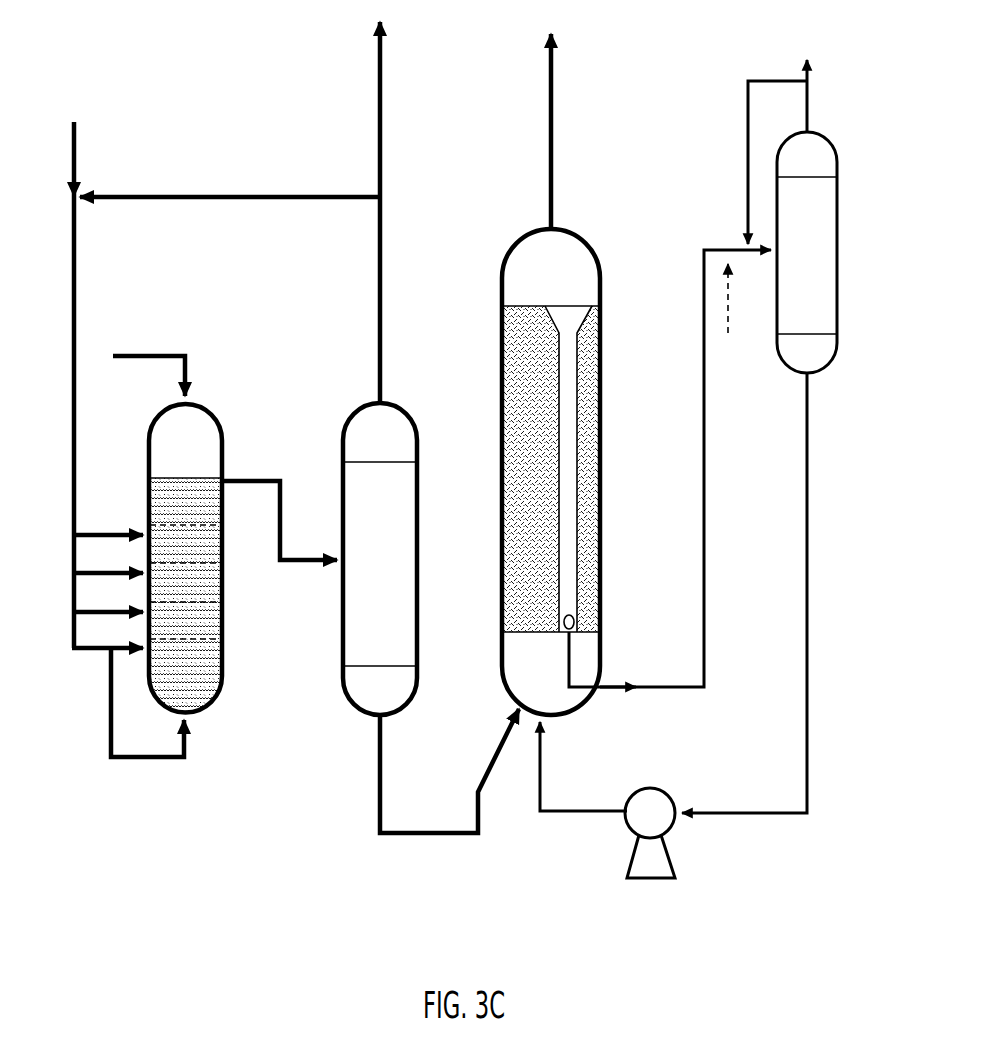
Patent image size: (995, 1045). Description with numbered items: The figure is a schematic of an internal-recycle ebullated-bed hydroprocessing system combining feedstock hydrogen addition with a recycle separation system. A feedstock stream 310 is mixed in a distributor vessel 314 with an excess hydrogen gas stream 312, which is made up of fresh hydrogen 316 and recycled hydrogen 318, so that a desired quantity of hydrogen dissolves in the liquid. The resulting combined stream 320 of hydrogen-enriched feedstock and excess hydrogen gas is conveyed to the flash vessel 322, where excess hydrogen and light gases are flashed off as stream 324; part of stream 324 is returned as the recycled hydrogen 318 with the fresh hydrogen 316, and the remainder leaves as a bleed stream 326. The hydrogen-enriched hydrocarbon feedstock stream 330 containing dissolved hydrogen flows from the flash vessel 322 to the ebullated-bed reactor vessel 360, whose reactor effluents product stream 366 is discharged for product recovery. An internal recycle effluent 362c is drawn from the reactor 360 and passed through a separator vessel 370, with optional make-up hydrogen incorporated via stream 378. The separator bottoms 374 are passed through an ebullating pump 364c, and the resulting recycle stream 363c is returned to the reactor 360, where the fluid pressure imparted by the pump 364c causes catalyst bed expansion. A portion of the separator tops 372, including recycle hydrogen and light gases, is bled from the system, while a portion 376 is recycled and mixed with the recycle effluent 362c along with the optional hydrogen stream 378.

The feedstock stream 310 is at (135, 356).
The hydrogen gas stream 312 is at (74, 462).
The distributor vessel 314 is at (166, 410).
The fresh hydrogen 316 is at (74, 158).
The recycled hydrogen stream 318 is at (207, 197).
The combined stream 320 is at (313, 556).
The flash vessel 322 is at (372, 402).
The flashed gas stream 324 is at (380, 293).
The bleed stream 326 is at (380, 162).
The hydrogen-enriched hydrocarbon feedstock stream 330 is at (380, 796).
The ebullated-bed reactor vessel 360 is at (525, 245).
The internal recycle effluent 362c is at (704, 490).
The recycle stream 363c is at (537, 790).
The ebullating pump 364c is at (680, 792).
The reactor effluents product stream 366 is at (551, 135).
The separator vessel 370 is at (784, 149).
The separator tops 372 is at (808, 98).
The separator bottoms 374 is at (807, 663).
The recycled portion of separator tops 376 is at (748, 92).
The optional hydrogen stream 378 is at (736, 316).